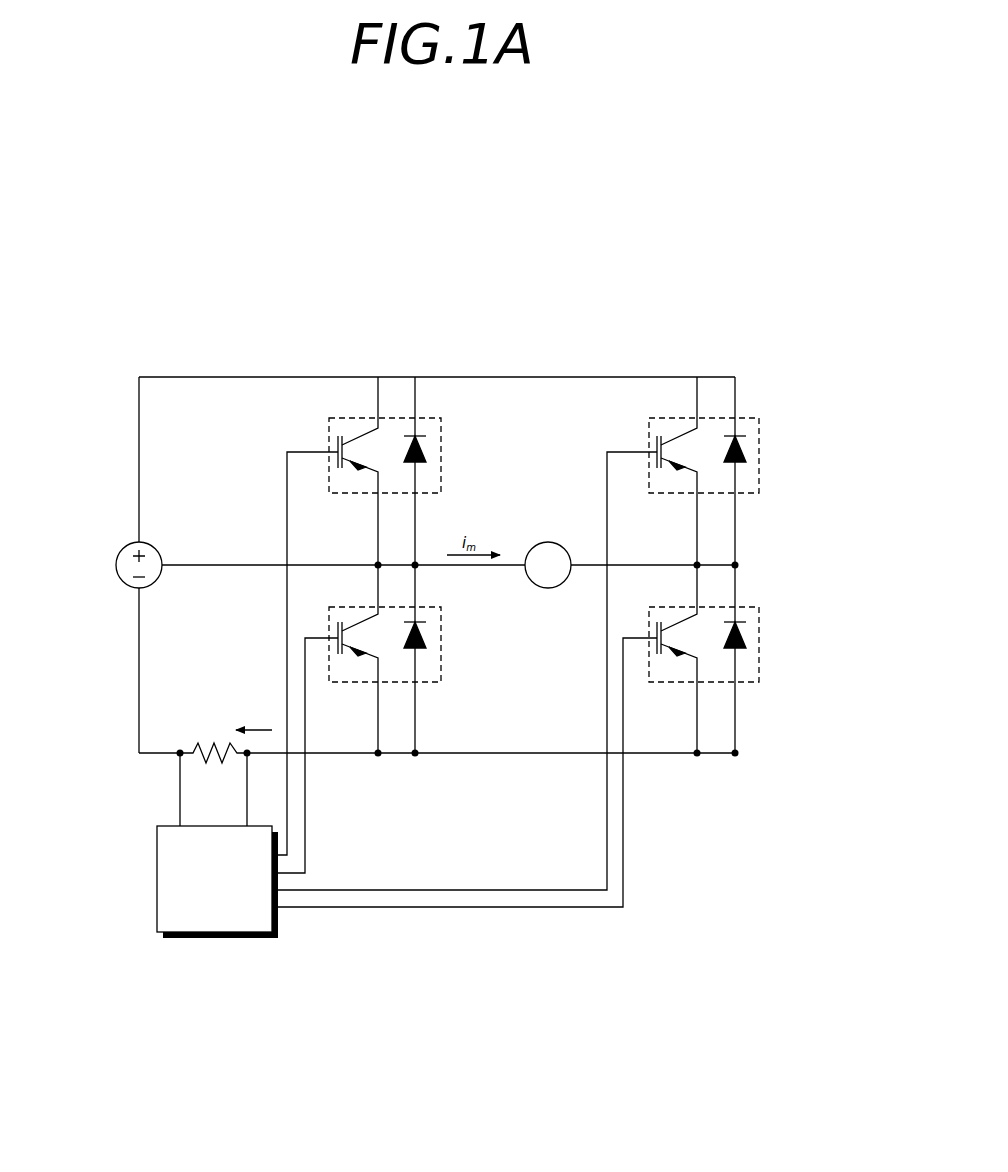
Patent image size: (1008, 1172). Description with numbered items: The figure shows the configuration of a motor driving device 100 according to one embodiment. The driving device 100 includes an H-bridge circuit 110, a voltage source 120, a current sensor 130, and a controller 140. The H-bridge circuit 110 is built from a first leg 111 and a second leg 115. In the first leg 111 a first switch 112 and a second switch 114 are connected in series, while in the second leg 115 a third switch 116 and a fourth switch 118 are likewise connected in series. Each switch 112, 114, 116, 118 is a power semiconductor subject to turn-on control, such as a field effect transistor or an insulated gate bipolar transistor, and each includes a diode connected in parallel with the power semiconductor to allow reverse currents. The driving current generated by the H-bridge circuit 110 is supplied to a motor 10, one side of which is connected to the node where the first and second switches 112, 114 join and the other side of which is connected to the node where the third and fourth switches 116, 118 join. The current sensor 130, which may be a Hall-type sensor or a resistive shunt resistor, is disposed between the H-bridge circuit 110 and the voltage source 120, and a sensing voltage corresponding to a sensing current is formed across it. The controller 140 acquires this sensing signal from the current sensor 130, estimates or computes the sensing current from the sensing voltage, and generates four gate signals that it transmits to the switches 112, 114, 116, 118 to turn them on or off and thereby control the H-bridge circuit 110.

The driving device 100 is at (178, 341).
The motor 10 is at (548, 542).
The H-bridge circuit 110 is at (636, 365).
The first leg 111 is at (393, 406).
The first switch 112 is at (355, 418).
The second switch 114 is at (441, 659).
The second leg 115 is at (723, 403).
The third switch 116 is at (759, 448).
The fourth switch 118 is at (759, 633).
The voltage source 120 is at (116, 565).
The current sensor 130 is at (180, 745).
The controller 140 is at (180, 940).